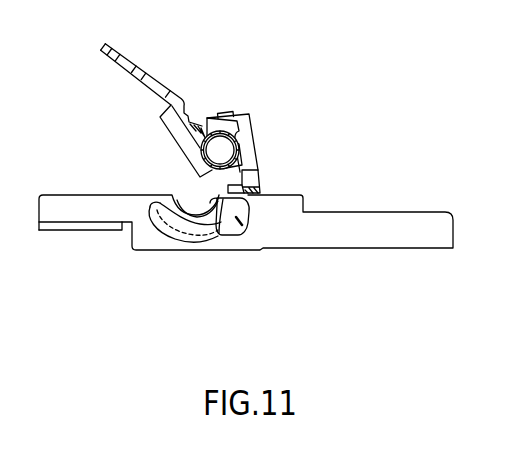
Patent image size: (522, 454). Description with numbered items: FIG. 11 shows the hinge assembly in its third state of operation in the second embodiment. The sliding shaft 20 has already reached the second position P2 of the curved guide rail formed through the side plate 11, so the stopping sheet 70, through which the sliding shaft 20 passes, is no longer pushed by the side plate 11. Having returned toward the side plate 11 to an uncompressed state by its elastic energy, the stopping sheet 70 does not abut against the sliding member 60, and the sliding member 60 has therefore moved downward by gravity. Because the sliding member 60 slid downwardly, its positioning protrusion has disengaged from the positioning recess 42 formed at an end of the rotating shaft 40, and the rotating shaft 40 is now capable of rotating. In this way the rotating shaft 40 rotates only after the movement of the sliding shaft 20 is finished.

The side plate 11 is at (312, 230).
The sliding shaft 20 is at (203, 238).
The second position P2 is at (238, 228).
The rotating shaft 40 is at (231, 152).
The positioning recess 42 is at (251, 126).
The sliding member 60 is at (249, 113).
The stopping sheet 70 is at (262, 189).